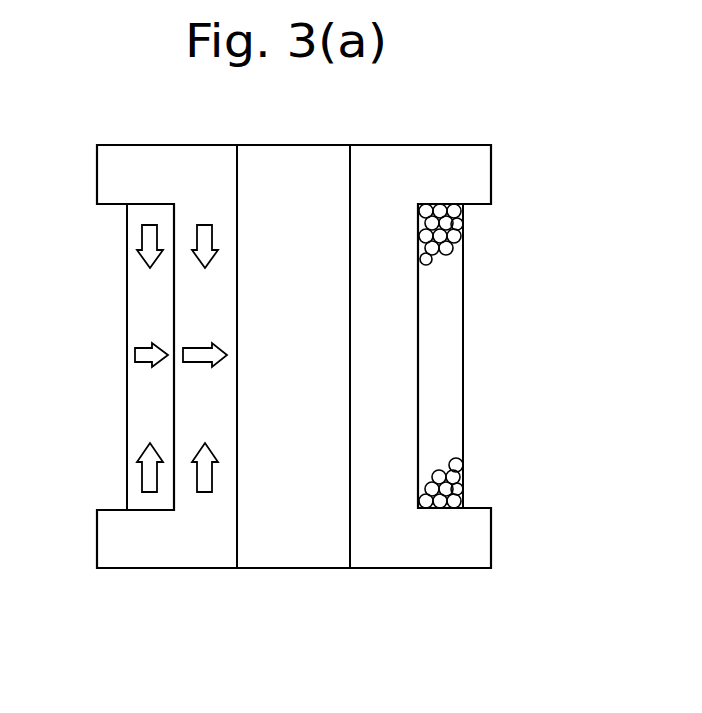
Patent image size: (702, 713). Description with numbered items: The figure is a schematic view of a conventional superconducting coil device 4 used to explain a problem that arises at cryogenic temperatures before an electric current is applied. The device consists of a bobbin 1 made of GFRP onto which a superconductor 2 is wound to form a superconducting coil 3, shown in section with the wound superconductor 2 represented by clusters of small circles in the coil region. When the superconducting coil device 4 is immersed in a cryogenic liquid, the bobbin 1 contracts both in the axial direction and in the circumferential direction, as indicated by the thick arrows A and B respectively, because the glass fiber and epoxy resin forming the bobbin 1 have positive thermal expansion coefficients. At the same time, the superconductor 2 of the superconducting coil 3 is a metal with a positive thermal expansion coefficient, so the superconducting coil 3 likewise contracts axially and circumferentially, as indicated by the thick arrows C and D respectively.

The GFRP bobbin 1 is at (391, 142).
The superconductor 2 is at (442, 246).
The superconducting coil 3 is at (464, 321).
The superconducting coil device 4 is at (256, 570).
The thick arrow A is at (213, 240).
The thick arrow B is at (200, 347).
The thick arrow C is at (143, 240).
The thick arrow D is at (142, 348).